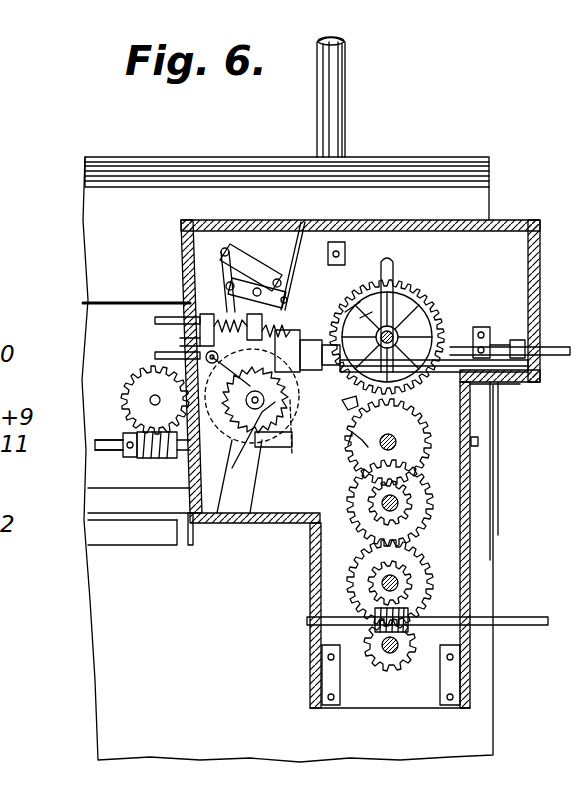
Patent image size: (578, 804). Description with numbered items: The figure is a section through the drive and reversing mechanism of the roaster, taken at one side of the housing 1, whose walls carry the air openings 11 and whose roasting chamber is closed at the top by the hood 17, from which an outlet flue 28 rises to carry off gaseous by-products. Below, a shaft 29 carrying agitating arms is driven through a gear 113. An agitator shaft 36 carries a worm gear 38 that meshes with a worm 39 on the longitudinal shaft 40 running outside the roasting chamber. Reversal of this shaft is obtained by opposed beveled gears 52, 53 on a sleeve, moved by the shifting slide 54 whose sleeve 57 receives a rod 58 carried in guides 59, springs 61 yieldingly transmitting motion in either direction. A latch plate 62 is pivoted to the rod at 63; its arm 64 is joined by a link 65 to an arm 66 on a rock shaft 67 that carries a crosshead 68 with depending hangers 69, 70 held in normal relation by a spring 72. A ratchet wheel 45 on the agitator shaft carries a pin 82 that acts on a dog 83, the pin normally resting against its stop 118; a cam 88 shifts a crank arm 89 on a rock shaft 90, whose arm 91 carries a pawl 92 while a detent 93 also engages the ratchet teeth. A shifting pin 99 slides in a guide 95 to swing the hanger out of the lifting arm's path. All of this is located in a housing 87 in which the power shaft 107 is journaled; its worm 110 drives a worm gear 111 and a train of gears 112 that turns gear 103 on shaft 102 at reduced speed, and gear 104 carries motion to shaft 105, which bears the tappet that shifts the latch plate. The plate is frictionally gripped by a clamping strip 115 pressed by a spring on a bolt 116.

The housing 1 is at (120, 677).
The openings 11 is at (158, 533).
The hood 17 is at (150, 178).
The outlet flue 28 is at (346, 99).
The shaft 29 is at (400, 660).
The agitator shaft 36 is at (125, 398).
The worm gear 38 is at (140, 415).
The worm 39 is at (148, 460).
The longitudinal shaft 40 is at (478, 441).
The ratchet wheel 45 is at (178, 507).
The beveled gear 52 is at (342, 425).
The beveled gear 53 is at (470, 411).
The shifting slide 54 is at (495, 393).
The sleeve 57 is at (425, 310).
The rod 58 is at (548, 350).
The guides 59 is at (525, 340).
The springs 61 is at (392, 290).
The latch plate 62 is at (515, 340).
The pivotal connection 63 is at (537, 300).
The arm 64 is at (284, 297).
The link 65 is at (230, 268).
The arm 66 is at (243, 250).
The rock shaft 67 is at (258, 288).
The crosshead 68 is at (238, 300).
The hanger 69 is at (240, 322).
The hanger 70 is at (348, 227).
The spring 72 is at (304, 257).
The pin 82 is at (290, 455).
The dog 83 is at (232, 466).
The housing 87 is at (196, 545).
The cam 88 is at (213, 446).
The crank arm 89 is at (167, 397).
The rock shaft 90 is at (140, 378).
The arm 91 is at (182, 342).
The pawl 92 is at (156, 320).
The detent 93 is at (250, 398).
The guide 95 is at (290, 332).
The shifting pin 99 is at (366, 447).
The shaft 102 is at (397, 443).
The gear 103 is at (427, 462).
The gear 104 is at (405, 290).
The shaft 105 is at (370, 318).
The power shaft 107 is at (535, 606).
The worm 110 is at (370, 630).
The worm gear 111 is at (363, 588).
The train of gears 112 is at (407, 527).
The gear 113 is at (380, 663).
The clamping strip 115 is at (385, 260).
The bolt 116 is at (398, 265).
The stop 118 is at (339, 405).